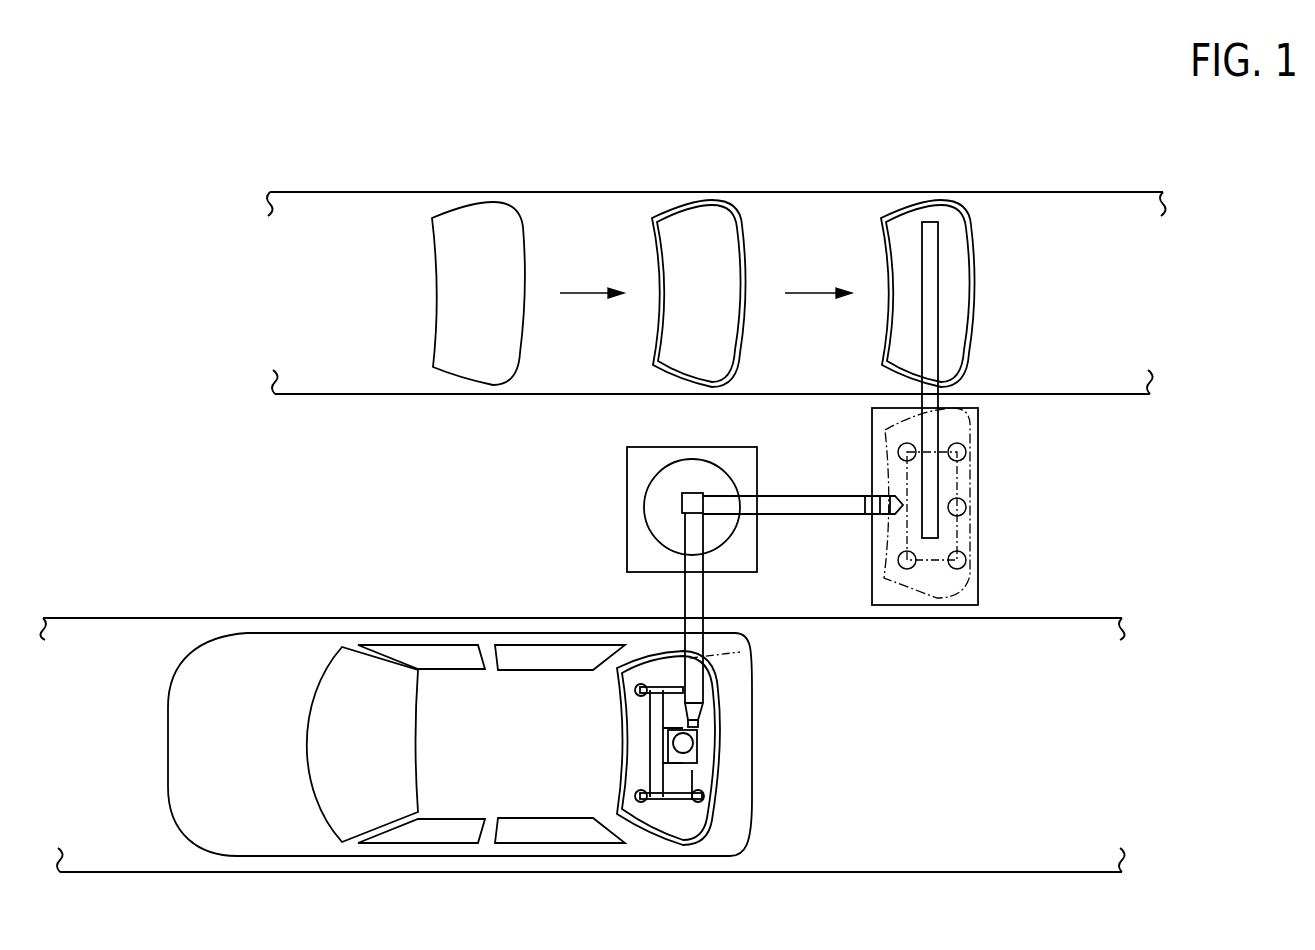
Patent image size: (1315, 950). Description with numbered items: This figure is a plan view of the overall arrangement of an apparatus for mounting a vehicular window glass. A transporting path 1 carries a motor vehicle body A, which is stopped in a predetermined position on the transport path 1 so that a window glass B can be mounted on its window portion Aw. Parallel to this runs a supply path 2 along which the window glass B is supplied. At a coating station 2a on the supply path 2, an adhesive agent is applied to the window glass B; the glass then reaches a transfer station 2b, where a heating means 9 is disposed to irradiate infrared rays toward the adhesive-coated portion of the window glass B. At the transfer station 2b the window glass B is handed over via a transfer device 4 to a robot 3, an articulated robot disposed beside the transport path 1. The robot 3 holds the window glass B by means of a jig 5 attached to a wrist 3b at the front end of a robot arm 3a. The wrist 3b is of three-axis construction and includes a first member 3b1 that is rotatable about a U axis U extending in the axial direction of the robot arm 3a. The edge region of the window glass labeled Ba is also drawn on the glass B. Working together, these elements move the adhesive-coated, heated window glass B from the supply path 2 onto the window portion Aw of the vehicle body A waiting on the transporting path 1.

The transporting path 1 is at (935, 853).
The supply path 2 is at (348, 202).
The coating station 2a is at (680, 196).
The transfer station 2b is at (990, 569).
The robot 3 is at (615, 484).
The robot arm 3a is at (810, 496).
The wrist 3b is at (705, 745).
The first member 3b1 is at (700, 710).
The transfer device 4 is at (959, 410).
The jig 5 is at (680, 782).
The heating means 9 is at (978, 512).
The motor vehicle body A is at (483, 853).
The window portion Aw is at (660, 833).
The window glass B is at (478, 215).
The bumper mounting flange Ba is at (657, 253).
The U axis U is at (740, 652).